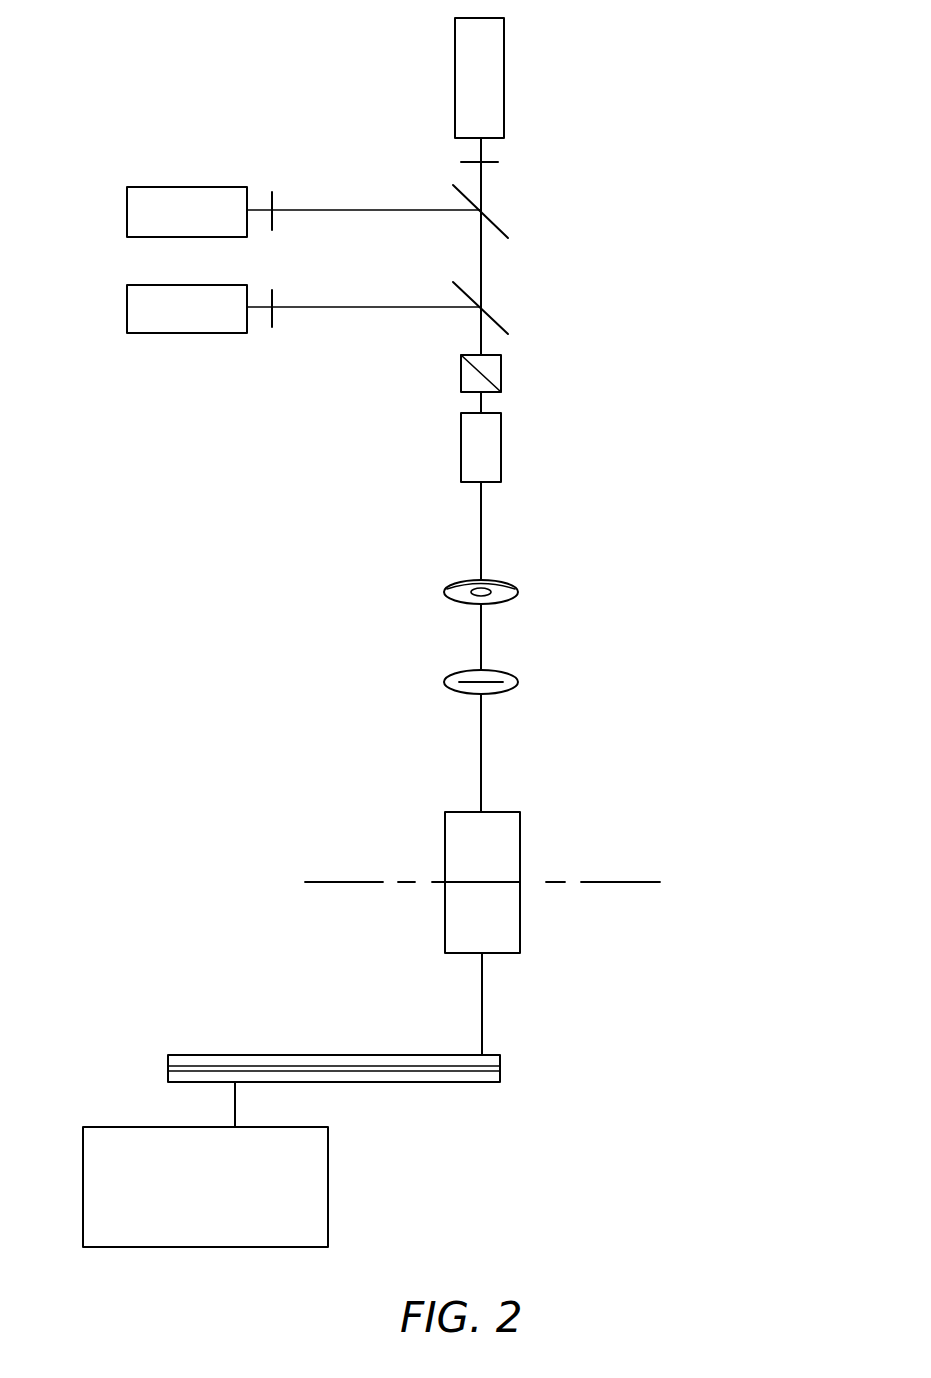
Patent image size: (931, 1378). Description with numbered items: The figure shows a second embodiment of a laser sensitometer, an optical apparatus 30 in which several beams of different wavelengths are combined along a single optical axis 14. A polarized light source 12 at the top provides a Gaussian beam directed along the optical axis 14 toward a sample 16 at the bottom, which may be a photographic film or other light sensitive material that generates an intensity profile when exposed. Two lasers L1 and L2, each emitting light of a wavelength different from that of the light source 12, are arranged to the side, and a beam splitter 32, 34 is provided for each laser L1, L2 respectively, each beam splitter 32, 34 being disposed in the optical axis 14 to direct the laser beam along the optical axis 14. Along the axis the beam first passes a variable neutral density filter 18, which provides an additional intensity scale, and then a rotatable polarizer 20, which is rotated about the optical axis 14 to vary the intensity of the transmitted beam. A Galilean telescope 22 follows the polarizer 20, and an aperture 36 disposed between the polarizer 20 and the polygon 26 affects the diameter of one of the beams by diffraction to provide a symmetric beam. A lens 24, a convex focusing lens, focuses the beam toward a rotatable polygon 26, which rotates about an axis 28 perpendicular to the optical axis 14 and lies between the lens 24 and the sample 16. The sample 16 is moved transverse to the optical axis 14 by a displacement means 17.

The polarized light source 12 is at (455, 58).
The optical axis 14 is at (484, 975).
The sample 16 is at (405, 1055).
The displacement means 17 is at (329, 1190).
The variable neutral density filter 18 is at (478, 162).
The rotatable polarizer 20 is at (461, 372).
The Galilean telescope 22 is at (461, 445).
The lens 24 is at (455, 677).
The rotatable polygon 26 is at (520, 882).
The axis 28 is at (357, 882).
The optical apparatus 30 is at (694, 281).
The beam splitter 32 is at (497, 226).
The beam splitter 34 is at (497, 322).
The aperture 36 is at (447, 588).
The laser L1 is at (183, 187).
The laser L2 is at (185, 333).